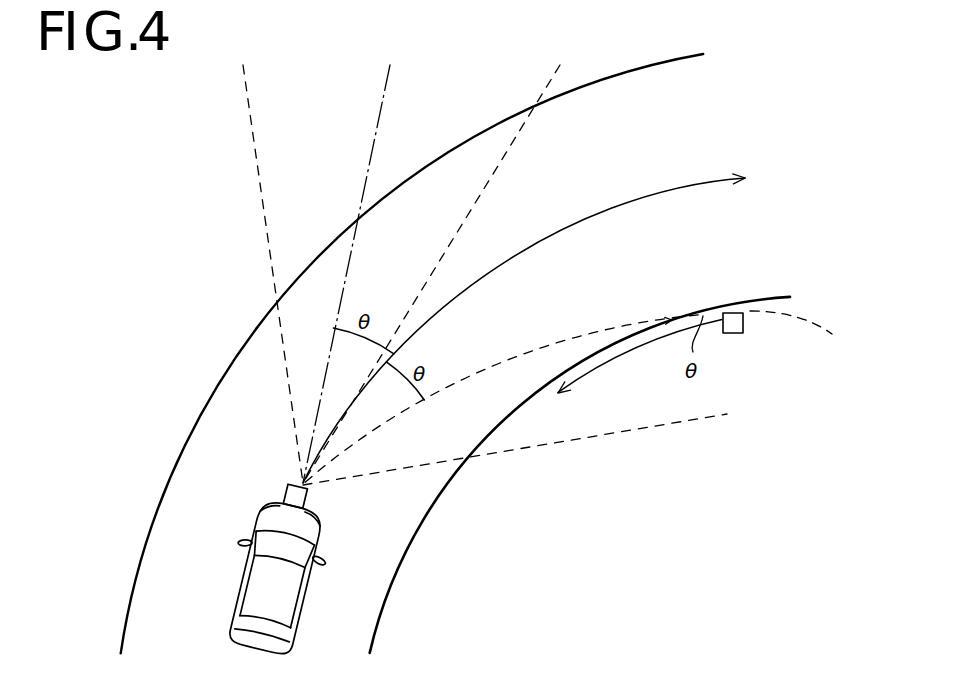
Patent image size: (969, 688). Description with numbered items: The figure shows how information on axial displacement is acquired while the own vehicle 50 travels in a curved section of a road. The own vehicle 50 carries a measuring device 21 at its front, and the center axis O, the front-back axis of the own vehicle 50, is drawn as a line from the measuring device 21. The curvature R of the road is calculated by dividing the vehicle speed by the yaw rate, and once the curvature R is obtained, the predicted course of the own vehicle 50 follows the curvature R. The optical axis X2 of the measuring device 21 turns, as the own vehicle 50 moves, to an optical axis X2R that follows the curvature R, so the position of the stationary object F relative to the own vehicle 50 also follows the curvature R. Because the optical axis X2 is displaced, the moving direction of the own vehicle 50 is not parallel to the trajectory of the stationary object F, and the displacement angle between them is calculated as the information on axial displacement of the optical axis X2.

The measuring device 21 is at (288, 493).
The own vehicle 50 is at (315, 578).
The stationary object F is at (743, 333).
The curvature of the road R is at (699, 185).
The center axis O is at (350, 259).
The optical axis X2 is at (438, 259).
The optical axis following the curvature X2R is at (802, 338).